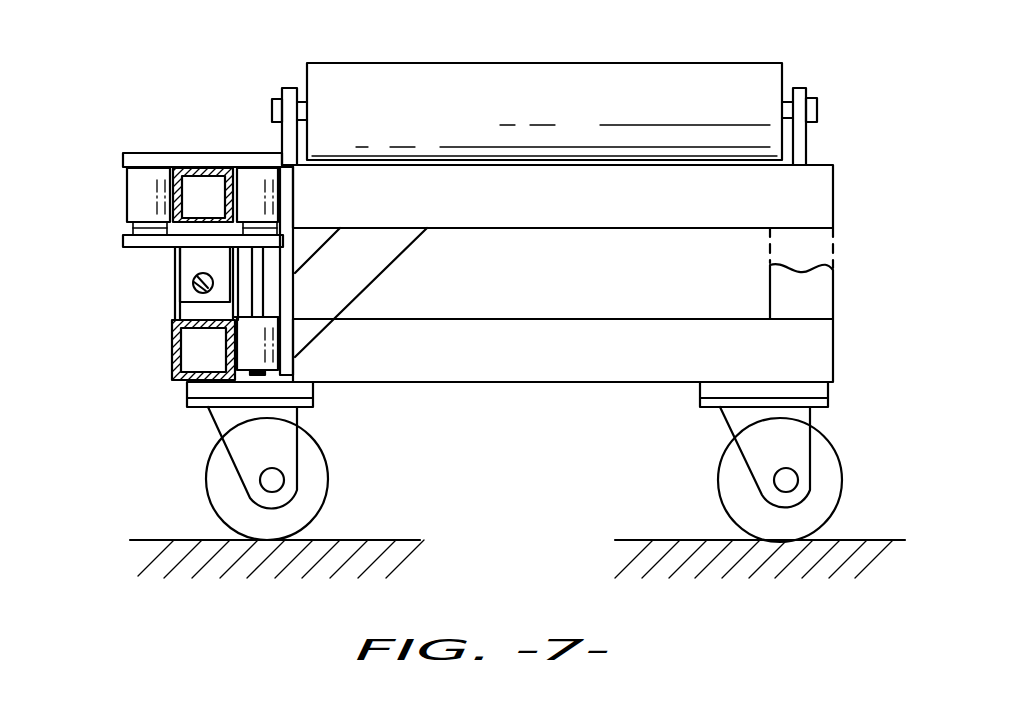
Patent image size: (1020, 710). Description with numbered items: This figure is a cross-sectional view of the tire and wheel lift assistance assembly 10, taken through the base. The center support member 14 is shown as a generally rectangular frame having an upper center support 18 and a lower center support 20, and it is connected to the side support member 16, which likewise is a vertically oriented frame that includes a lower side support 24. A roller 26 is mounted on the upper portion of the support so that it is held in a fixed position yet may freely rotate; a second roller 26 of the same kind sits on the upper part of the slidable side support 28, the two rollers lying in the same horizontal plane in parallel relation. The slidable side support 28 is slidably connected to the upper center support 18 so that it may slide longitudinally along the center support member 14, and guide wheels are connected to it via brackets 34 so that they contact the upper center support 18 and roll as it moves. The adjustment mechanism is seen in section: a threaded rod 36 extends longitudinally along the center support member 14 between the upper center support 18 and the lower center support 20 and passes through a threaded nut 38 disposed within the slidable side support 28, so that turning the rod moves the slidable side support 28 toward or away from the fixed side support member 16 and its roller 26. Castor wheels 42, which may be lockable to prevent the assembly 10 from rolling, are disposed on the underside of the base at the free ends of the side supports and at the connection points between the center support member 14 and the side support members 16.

The tire and wheel lift assistance assembly 10 is at (582, 412).
The center support member 14 is at (100, 167).
The side support member 16 is at (862, 167).
The upper center support 18 is at (207, 187).
The lower center support 20 is at (195, 352).
The lower side support 24 is at (604, 335).
The roller 26 is at (660, 60).
The slidable side support 28 is at (639, 232).
The brackets 34 is at (245, 151).
The threaded rod 36 is at (188, 283).
The threaded nut 38 is at (178, 258).
The castor wheels 42 is at (203, 495).